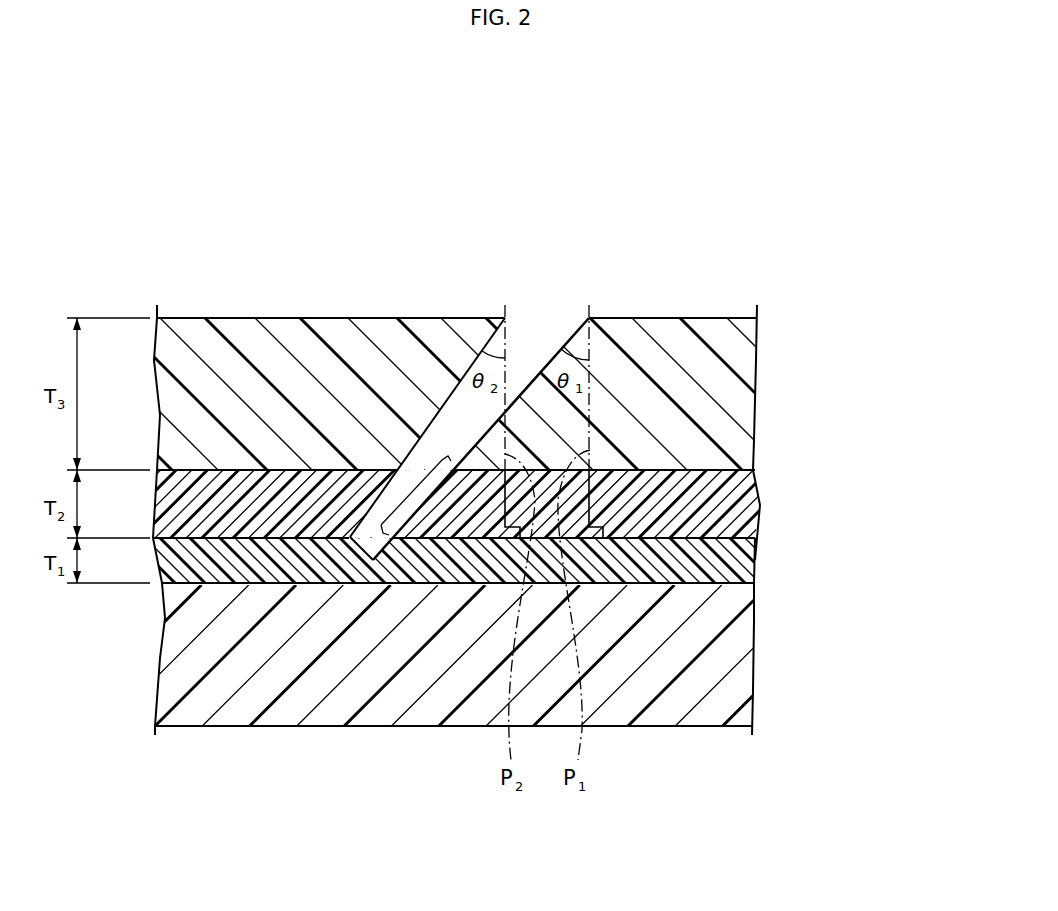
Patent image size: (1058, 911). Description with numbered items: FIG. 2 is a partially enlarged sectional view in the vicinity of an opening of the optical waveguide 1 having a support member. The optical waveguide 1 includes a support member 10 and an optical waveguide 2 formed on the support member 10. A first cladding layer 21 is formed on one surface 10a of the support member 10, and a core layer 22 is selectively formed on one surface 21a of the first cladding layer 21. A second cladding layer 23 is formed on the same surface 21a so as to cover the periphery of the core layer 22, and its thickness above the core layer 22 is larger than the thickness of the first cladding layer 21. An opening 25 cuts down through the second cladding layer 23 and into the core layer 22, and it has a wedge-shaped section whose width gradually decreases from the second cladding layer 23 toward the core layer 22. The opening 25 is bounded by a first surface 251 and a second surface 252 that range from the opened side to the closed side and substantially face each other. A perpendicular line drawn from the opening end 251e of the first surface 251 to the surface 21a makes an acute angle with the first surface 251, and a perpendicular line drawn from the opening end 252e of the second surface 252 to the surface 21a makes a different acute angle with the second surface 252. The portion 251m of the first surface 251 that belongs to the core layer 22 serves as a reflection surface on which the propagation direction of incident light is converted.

The optical waveguide having a support member 1 is at (489, 497).
The optical waveguide 2 is at (464, 421).
The support member 10 is at (467, 497).
The one surface of the support member 10a is at (212, 583).
The first cladding layer 21 is at (481, 421).
The one surface of the first cladding layer 21a is at (285, 538).
The core layer 22 is at (735, 504).
The second cladding layer 23 is at (735, 398).
The opening 25 is at (504, 378).
The first surface 251 is at (548, 360).
The opening end of the first surface 251e is at (592, 314).
The reflection surface 251m is at (413, 492).
The second surface 252 is at (452, 393).
The opening end of the second surface 252e is at (503, 314).